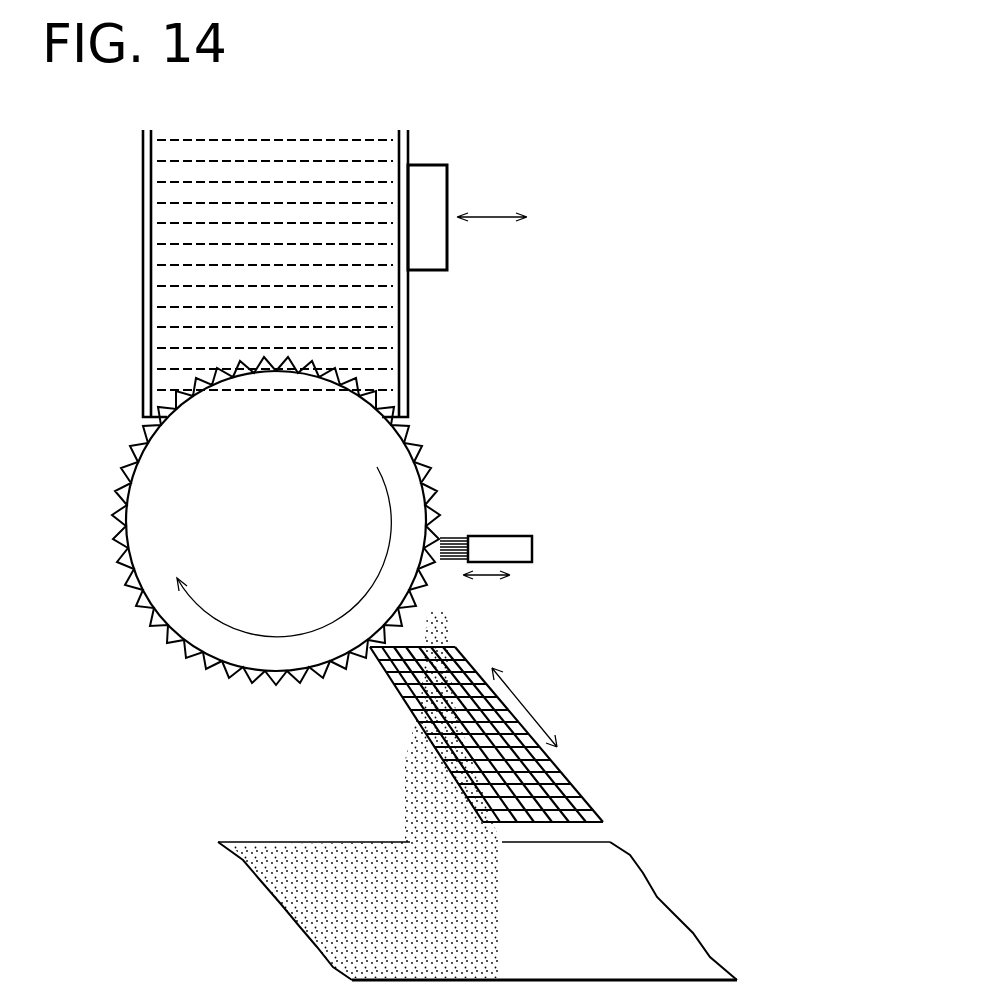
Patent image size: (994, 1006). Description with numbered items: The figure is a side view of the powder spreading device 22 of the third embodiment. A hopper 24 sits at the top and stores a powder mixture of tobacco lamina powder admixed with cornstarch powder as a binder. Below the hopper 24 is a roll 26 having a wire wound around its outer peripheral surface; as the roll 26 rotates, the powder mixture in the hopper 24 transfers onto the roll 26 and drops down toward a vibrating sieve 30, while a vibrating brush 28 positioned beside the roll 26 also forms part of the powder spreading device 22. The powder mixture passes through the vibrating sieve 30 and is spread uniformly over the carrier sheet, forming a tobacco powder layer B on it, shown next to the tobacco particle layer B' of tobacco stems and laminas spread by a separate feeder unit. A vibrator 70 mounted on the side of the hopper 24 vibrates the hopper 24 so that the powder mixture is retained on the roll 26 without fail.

The powder spreading device 22 is at (575, 238).
The hopper 24 is at (408, 340).
The roll 26 is at (182, 615).
The vibrating brush 28 is at (505, 535).
The vibrating sieve 30 is at (585, 800).
The vibrator 70 is at (447, 240).
The tobacco powder layer B is at (366, 795).
The tobacco particle layer B' is at (477, 911).